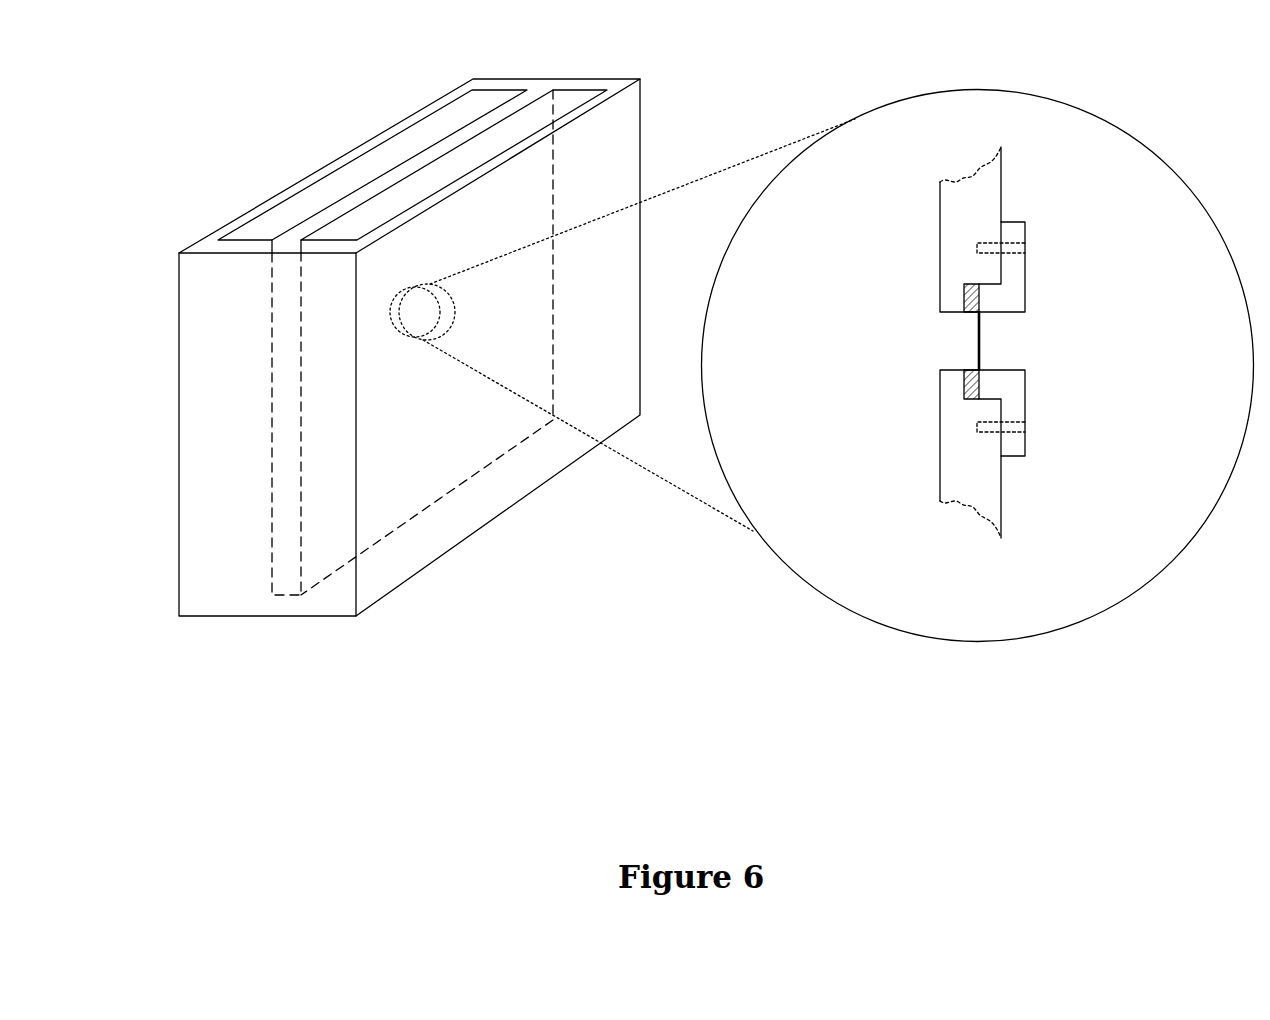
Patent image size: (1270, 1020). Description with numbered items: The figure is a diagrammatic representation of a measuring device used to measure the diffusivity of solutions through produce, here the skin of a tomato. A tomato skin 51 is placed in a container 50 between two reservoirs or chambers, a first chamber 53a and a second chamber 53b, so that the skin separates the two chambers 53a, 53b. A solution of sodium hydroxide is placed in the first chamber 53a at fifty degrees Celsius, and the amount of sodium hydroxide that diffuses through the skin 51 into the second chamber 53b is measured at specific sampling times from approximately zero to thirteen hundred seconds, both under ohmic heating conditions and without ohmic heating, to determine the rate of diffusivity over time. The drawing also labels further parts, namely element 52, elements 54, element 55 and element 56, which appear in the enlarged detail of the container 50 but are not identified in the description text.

The container 50 is at (164, 254).
The tomato skin 51 is at (972, 347).
The slot / block 52 is at (292, 236).
The first chamber 53a is at (483, 97).
The second chamber 53b is at (566, 99).
The holes 54 is at (1029, 254).
The lower block / flange 55 is at (1027, 448).
The bonding pad / adhesive layer 56 is at (962, 388).